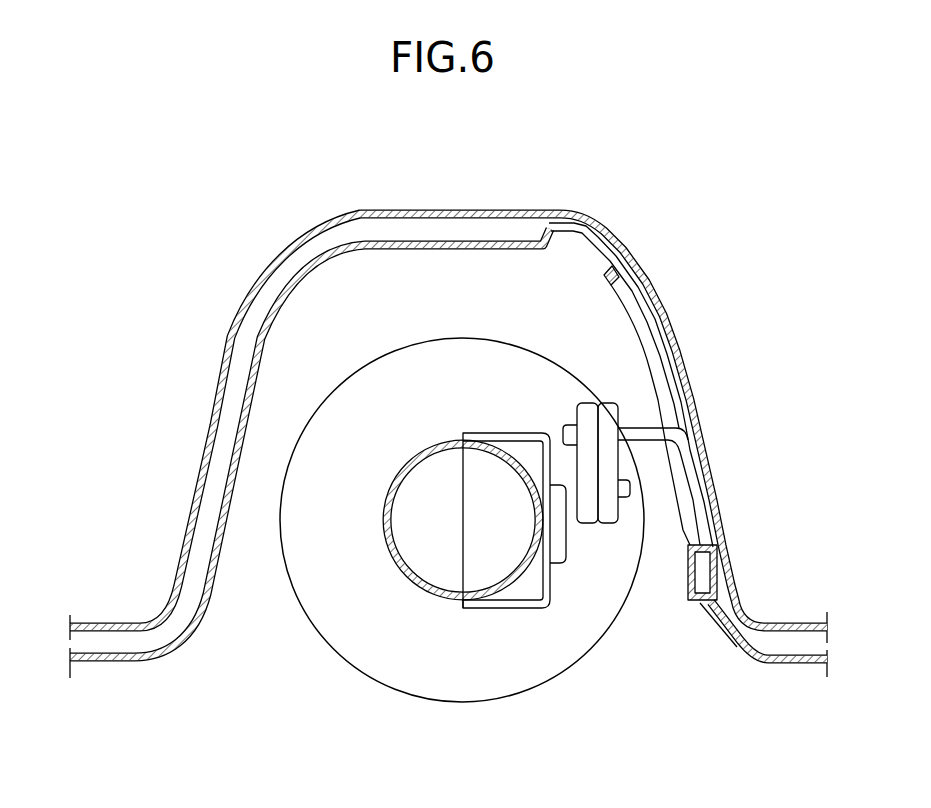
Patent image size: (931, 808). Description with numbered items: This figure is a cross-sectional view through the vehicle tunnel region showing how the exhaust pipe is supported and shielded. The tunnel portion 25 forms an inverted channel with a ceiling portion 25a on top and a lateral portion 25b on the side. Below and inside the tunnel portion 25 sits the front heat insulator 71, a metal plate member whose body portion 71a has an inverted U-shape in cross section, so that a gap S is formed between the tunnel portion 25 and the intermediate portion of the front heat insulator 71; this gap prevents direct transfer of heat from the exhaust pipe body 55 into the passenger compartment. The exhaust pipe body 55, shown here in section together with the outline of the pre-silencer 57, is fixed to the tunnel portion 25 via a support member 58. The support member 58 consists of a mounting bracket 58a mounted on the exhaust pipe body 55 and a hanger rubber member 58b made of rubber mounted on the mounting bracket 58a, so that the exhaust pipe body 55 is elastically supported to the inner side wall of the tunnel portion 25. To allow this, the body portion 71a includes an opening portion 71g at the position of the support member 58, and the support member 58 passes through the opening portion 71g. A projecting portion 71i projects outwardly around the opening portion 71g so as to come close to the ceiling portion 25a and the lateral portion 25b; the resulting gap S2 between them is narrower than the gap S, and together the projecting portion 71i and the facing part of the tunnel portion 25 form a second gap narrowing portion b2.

The tunnel portion 25 is at (448, 393).
The ceiling portion 25a is at (446, 225).
The lateral portion 25b is at (686, 370).
The front heat insulator 71 is at (448, 411).
The body portion 71a is at (363, 241).
The projecting portion 71i is at (622, 240).
The opening portion 71g is at (662, 297).
The exhaust pipe body 55 is at (431, 592).
The pre-silencer 57 is at (357, 670).
The support member 58 is at (584, 583).
The mounting bracket 58a is at (508, 610).
The hanger rubber member 58b is at (618, 443).
The gap S is at (413, 280).
The gap S2 is at (583, 214).
The second gap narrowing portion b2 is at (610, 215).